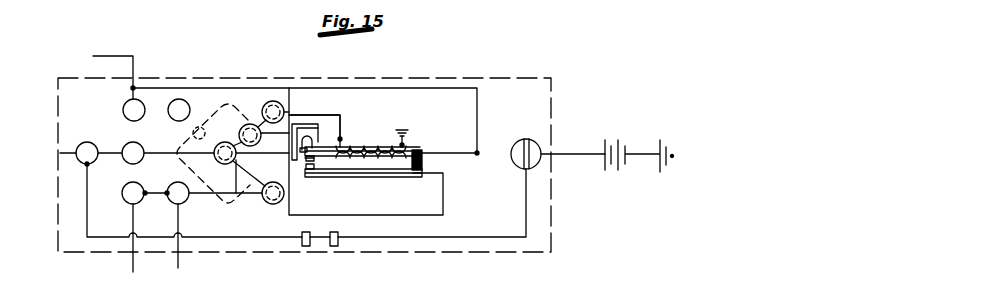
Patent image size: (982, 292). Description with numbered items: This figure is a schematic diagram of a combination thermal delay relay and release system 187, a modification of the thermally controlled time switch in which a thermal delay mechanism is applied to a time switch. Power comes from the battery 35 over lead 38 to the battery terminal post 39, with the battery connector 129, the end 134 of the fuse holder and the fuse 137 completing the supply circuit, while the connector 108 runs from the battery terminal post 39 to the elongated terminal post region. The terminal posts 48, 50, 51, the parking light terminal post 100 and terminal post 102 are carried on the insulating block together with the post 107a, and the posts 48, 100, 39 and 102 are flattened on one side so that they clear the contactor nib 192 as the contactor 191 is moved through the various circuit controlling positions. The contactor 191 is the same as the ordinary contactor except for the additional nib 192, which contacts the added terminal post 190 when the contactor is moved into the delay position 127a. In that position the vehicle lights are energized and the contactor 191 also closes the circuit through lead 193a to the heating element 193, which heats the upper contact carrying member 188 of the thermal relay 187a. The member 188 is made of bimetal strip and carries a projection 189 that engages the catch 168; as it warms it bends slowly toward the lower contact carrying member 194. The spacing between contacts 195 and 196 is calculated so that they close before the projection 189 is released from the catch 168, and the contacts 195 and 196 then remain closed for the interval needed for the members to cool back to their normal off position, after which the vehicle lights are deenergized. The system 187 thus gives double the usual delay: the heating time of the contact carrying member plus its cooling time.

The battery 35 is at (628, 172).
The lead 38 is at (578, 158).
The battery terminal post 39 is at (60, 153).
The terminal post 48 is at (129, 103).
The terminal post 50 is at (127, 203).
The contact 51 is at (183, 204).
The parking light terminal post 100 is at (170, 101).
The terminal post 102 is at (127, 145).
The contact 107a is at (272, 101).
The connector 108 is at (147, 151).
The delay position 127a is at (262, 195).
The battery connector 129 is at (488, 240).
The end of fuse holder 134 is at (87, 222).
The fuse 137 is at (322, 247).
The catch 168 is at (312, 128).
The combination thermal delay relay and release system 187 is at (613, 116).
The thermal relay 187a is at (415, 149).
The upper contact carrying member 188 is at (418, 149).
The projection 189 is at (322, 143).
The added terminal post 190 is at (243, 162).
The contactor 191 is at (202, 119).
The nib 192 is at (247, 126).
The heating element 193 is at (371, 140).
The lead 193a is at (331, 108).
The lower contact carrying member 194 is at (402, 180).
The contact 195 is at (307, 158).
The contact 196 is at (306, 165).